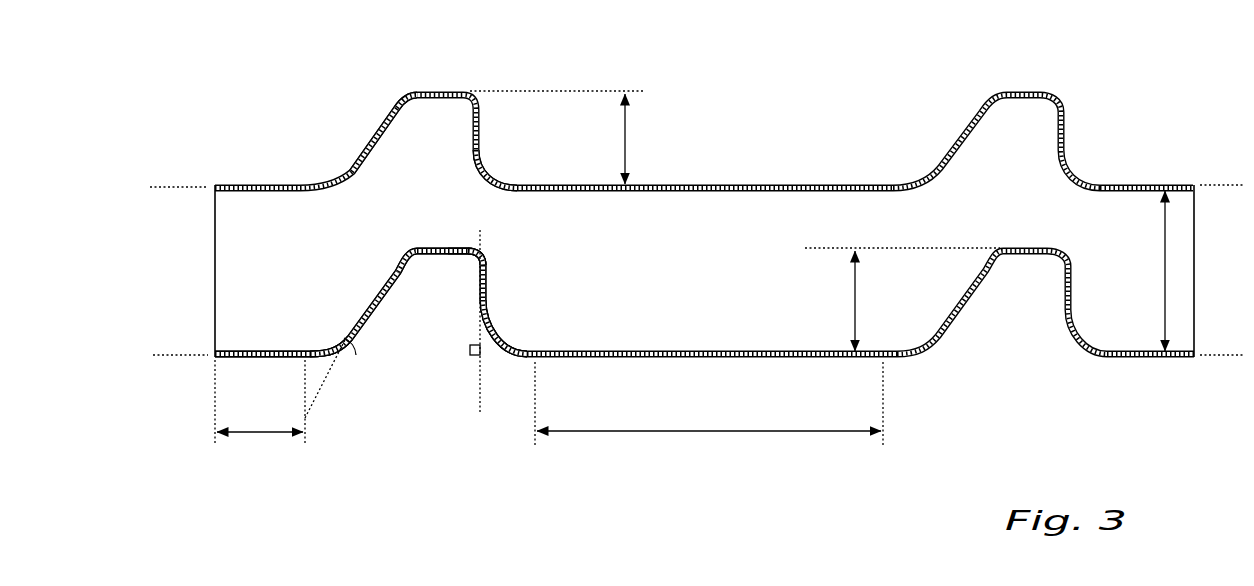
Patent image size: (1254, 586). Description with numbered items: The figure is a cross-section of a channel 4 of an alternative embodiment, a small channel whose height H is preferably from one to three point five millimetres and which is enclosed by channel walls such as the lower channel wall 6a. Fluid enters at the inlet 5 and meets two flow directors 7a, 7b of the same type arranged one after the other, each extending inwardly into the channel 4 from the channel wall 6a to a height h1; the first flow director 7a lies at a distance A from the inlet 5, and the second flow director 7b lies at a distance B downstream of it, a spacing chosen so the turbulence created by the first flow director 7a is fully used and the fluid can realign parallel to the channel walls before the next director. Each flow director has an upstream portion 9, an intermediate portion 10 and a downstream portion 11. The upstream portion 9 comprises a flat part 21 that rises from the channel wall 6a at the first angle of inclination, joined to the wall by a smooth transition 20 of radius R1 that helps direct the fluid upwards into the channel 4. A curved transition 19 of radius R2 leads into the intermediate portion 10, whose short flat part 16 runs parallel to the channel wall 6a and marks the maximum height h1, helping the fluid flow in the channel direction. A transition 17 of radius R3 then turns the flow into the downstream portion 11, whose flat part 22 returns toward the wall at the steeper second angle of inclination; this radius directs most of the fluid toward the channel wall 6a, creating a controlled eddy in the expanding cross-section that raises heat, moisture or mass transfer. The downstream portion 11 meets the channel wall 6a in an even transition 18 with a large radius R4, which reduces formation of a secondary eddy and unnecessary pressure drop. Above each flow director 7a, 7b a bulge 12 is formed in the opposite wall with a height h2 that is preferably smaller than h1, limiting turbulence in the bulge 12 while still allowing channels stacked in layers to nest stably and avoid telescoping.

The channel 4 is at (1160, 125).
The inlet 5 is at (215, 272).
The channel wall 6a is at (240, 353).
The first flow director 7a is at (430, 337).
The second flow director 7b is at (1000, 337).
The upstream portion 9 is at (362, 298).
The intermediate portion 10 is at (434, 225).
The downstream portion 11 is at (492, 292).
The bulge 12 is at (463, 92).
The flat part 16 is at (450, 250).
The transition 17 is at (508, 205).
The transition 18 is at (500, 360).
The curved transition 19 is at (400, 252).
The smooth transition 20 is at (343, 355).
The flat part 21 is at (365, 297).
The flat part 22 is at (488, 284).
The radius of transition 20 R1 is at (340, 340).
The radius of transition 19 R2 is at (402, 252).
The radius of transition 17 R3 is at (485, 260).
The radius of transition 18 R4 is at (510, 338).
The distance from inlet A is at (260, 402).
The distance between flow directors B is at (709, 403).
The channel height H is at (1150, 271).
The flow director height h1 is at (902, 299).
The bulge height h2 is at (571, 137).